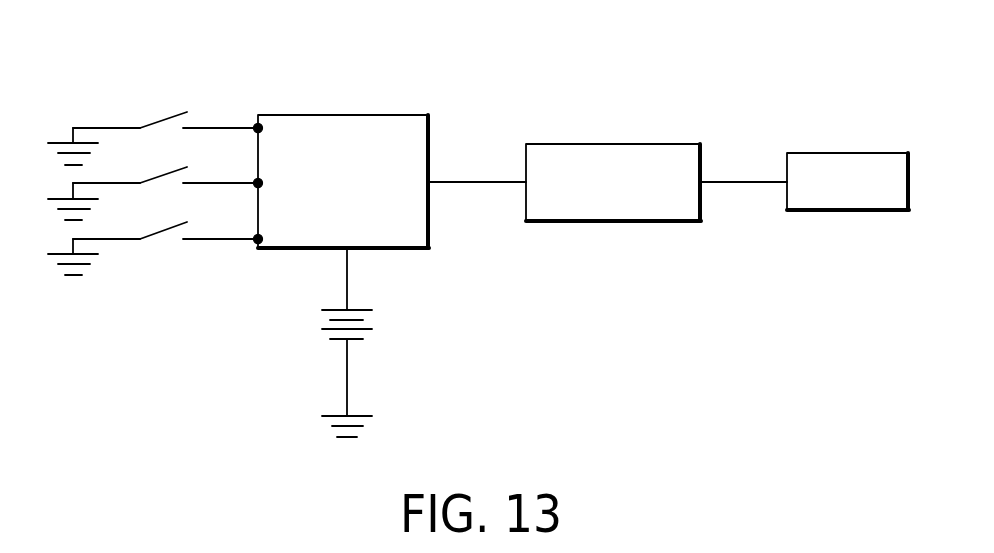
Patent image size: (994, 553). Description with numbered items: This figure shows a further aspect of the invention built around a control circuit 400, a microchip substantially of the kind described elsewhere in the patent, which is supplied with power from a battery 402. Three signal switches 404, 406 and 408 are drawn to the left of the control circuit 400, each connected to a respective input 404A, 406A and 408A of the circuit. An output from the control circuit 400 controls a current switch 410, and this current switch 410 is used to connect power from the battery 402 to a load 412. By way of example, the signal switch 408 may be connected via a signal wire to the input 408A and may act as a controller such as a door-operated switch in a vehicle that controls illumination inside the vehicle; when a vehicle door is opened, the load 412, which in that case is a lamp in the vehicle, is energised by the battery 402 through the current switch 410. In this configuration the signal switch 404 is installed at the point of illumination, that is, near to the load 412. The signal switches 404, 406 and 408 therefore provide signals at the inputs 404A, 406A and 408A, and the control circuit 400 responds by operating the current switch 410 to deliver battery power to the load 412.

The control circuit 400 is at (422, 235).
The battery 402 is at (372, 320).
The signal switch 404 is at (162, 117).
The input 404A is at (254, 127).
The signal switch 406 is at (158, 174).
The input 406A is at (255, 180).
The signal switch 408 is at (160, 230).
The input 408A is at (257, 245).
The current switch 410 is at (657, 222).
The load 412 is at (853, 212).